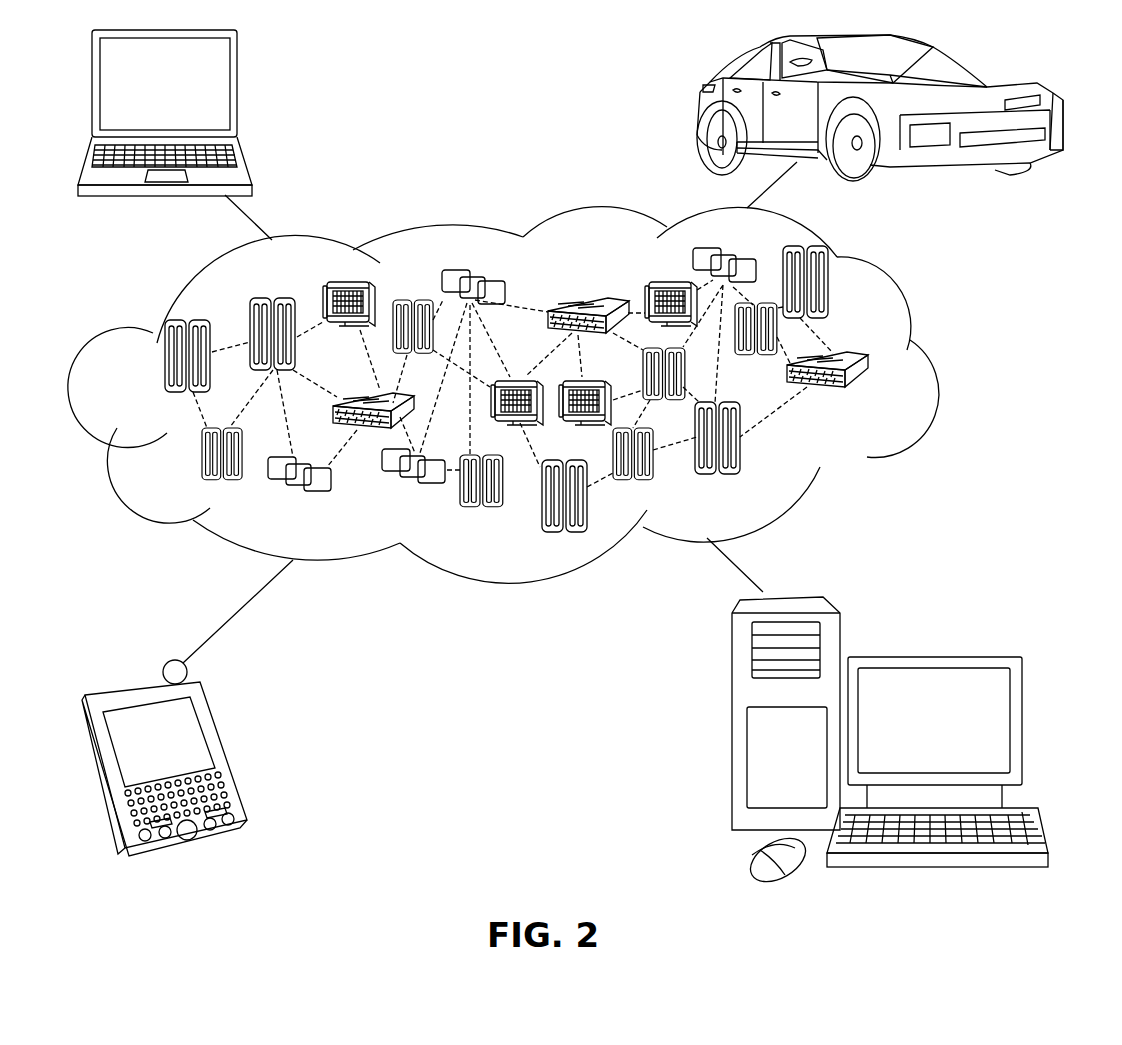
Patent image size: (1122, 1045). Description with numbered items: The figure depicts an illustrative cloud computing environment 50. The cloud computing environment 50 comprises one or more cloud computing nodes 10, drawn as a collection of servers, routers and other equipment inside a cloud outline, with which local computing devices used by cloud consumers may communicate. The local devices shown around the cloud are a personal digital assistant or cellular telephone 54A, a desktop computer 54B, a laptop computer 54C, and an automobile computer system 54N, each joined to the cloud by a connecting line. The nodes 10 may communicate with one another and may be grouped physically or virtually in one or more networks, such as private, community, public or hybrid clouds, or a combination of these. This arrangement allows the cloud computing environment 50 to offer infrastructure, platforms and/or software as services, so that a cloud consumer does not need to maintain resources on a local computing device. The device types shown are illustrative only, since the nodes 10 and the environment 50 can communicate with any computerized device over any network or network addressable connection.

The cloud computing nodes 10 is at (878, 399).
The cloud computing environment 50 is at (937, 370).
The personal digital assistant (PDA) or cellular telephone 54A is at (228, 750).
The desktop computer 54B is at (930, 657).
The laptop computer 54C is at (237, 90).
The automobile computer system 54N is at (698, 105).